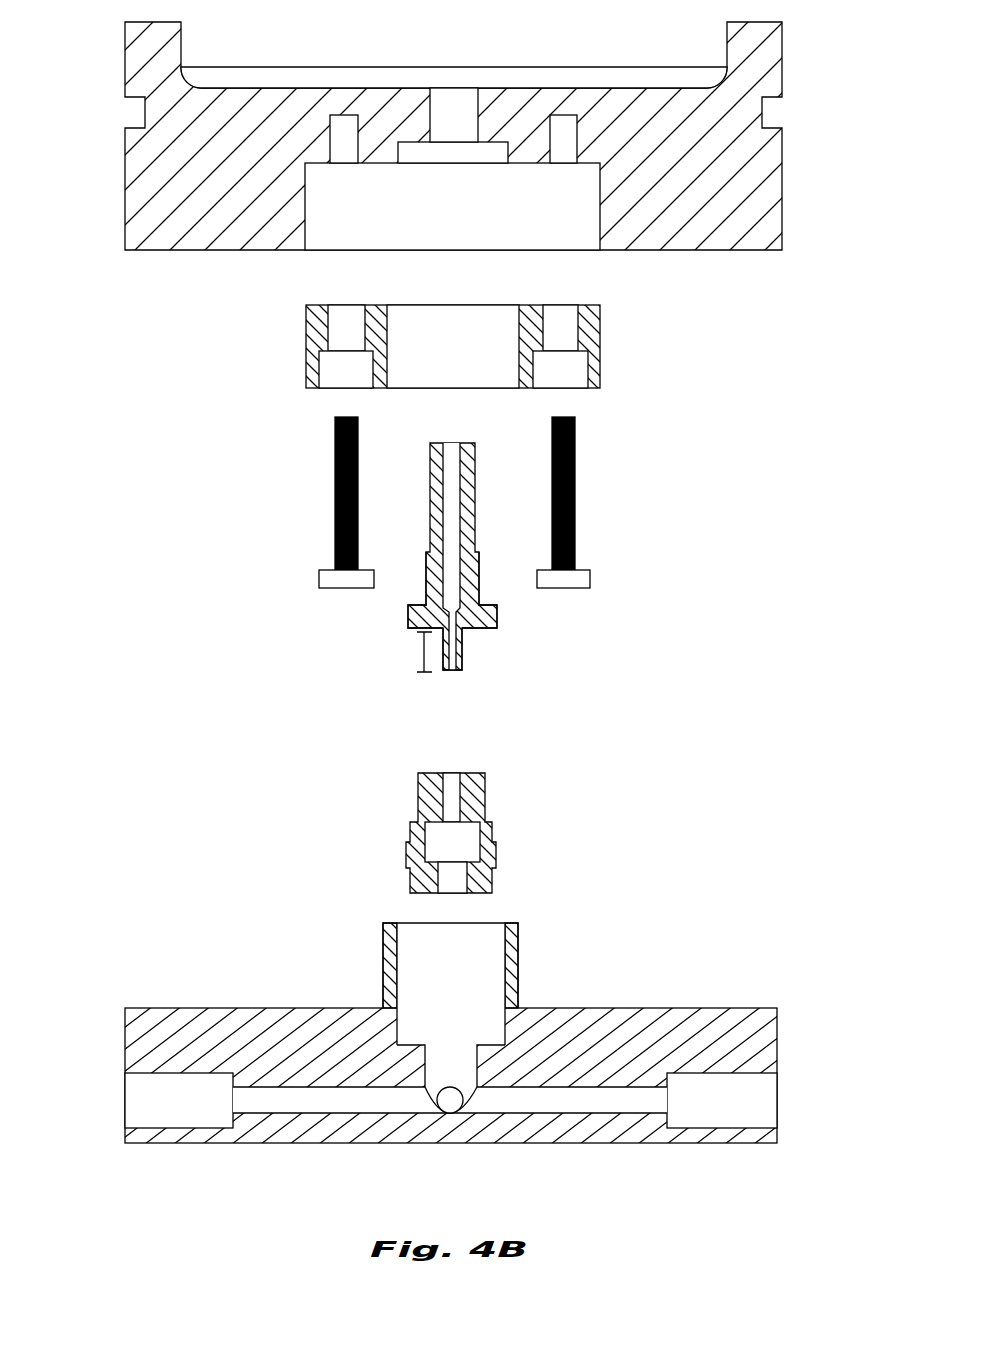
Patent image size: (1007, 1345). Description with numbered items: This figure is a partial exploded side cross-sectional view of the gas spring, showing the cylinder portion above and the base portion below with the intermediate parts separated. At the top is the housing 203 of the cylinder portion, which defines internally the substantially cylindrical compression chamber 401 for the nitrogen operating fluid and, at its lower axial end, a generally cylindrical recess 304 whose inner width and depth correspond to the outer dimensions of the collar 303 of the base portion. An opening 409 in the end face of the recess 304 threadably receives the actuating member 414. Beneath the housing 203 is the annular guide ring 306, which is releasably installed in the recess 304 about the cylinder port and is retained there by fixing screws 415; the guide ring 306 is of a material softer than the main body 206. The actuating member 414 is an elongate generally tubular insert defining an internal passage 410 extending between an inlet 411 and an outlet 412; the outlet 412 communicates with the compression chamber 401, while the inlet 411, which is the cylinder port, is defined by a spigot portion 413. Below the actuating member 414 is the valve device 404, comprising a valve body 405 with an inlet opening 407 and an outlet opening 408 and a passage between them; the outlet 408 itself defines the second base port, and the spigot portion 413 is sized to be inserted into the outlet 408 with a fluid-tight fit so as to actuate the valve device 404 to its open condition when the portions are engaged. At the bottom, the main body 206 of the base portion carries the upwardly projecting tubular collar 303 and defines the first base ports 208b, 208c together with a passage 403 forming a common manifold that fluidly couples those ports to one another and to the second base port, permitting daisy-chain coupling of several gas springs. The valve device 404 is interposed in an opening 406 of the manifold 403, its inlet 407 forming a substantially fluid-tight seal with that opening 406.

The housing 203 is at (773, 65).
The compression chamber 401 is at (471, 56).
The recess 304 is at (471, 222).
The opening 409 is at (472, 115).
The guide ring 306 is at (592, 345).
The fixing screws 415 is at (335, 447).
The outlet 412 is at (453, 443).
The passage 410 is at (453, 580).
The inlet 411 is at (452, 672).
The spigot portion 413 is at (421, 655).
The actuating member 414 is at (480, 559).
The valve device 404 is at (487, 837).
The outlet opening 408 is at (452, 775).
The valve body 405 is at (492, 853).
The inlet opening 407 is at (452, 893).
The collar 303 is at (552, 955).
The opening 406 is at (448, 1055).
The main body 206 is at (700, 1013).
The passage 403 is at (553, 1111).
The first base port 208b is at (138, 1110).
The first base port 208c is at (762, 1102).